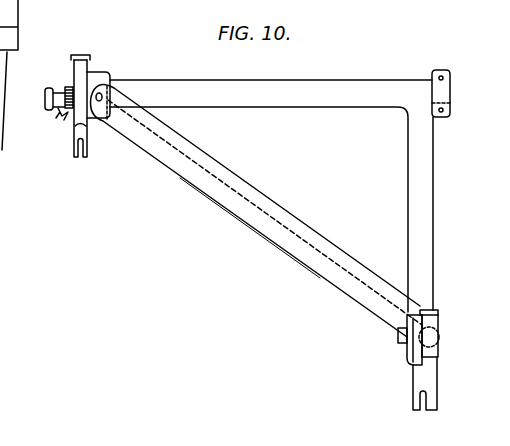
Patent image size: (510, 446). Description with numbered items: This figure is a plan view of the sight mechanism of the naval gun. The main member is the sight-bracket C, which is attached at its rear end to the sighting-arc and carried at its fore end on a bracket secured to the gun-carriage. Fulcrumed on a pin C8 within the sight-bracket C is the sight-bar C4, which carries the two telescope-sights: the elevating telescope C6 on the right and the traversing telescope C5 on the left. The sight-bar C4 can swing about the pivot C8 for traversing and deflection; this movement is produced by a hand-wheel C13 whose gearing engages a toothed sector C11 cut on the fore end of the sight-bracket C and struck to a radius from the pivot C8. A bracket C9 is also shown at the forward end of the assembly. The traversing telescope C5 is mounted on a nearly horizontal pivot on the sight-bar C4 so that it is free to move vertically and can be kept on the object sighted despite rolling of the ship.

The sight-bracket C is at (250, 240).
The sight-bar C4 is at (257, 225).
The traversing telescope C5 is at (77, 115).
The elevating telescope C6 is at (423, 395).
The pin C8 is at (439, 335).
The bracket C9 is at (100, 73).
The toothed sector C11 is at (57, 116).
The hand-wheel C13 is at (47, 100).